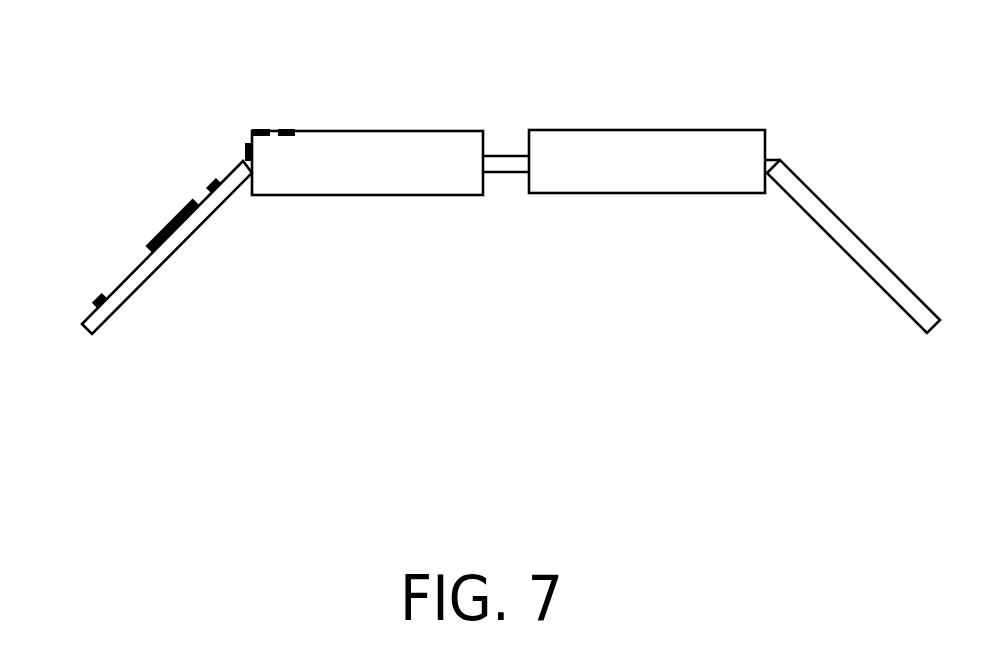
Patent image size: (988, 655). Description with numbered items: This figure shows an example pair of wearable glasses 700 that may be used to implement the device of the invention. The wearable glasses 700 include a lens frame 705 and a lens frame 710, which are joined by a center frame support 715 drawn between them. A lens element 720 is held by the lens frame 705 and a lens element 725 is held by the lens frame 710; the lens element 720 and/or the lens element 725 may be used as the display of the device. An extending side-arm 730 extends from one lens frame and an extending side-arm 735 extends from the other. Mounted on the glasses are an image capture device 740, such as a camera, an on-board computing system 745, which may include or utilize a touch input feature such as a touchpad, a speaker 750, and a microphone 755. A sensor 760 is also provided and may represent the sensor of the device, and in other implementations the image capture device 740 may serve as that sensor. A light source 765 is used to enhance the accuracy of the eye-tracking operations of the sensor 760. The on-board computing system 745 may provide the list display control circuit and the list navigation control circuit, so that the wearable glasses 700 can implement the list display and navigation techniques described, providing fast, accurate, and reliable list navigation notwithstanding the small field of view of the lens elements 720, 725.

The wearable glasses 700 is at (813, 86).
The lens frame 705 is at (370, 131).
The lens frame 710 is at (662, 128).
The center frame support 715 is at (498, 150).
The lens element 720 is at (358, 180).
The lens element 725 is at (667, 173).
The extending side-arm 730 is at (91, 320).
The extending side-arm 735 is at (892, 290).
The image capture device 740 is at (245, 143).
The on-board computing system 745 is at (155, 227).
The speaker 750 is at (98, 295).
The microphone 755 is at (213, 177).
The sensor 760 is at (262, 131).
The light source 765 is at (285, 131).